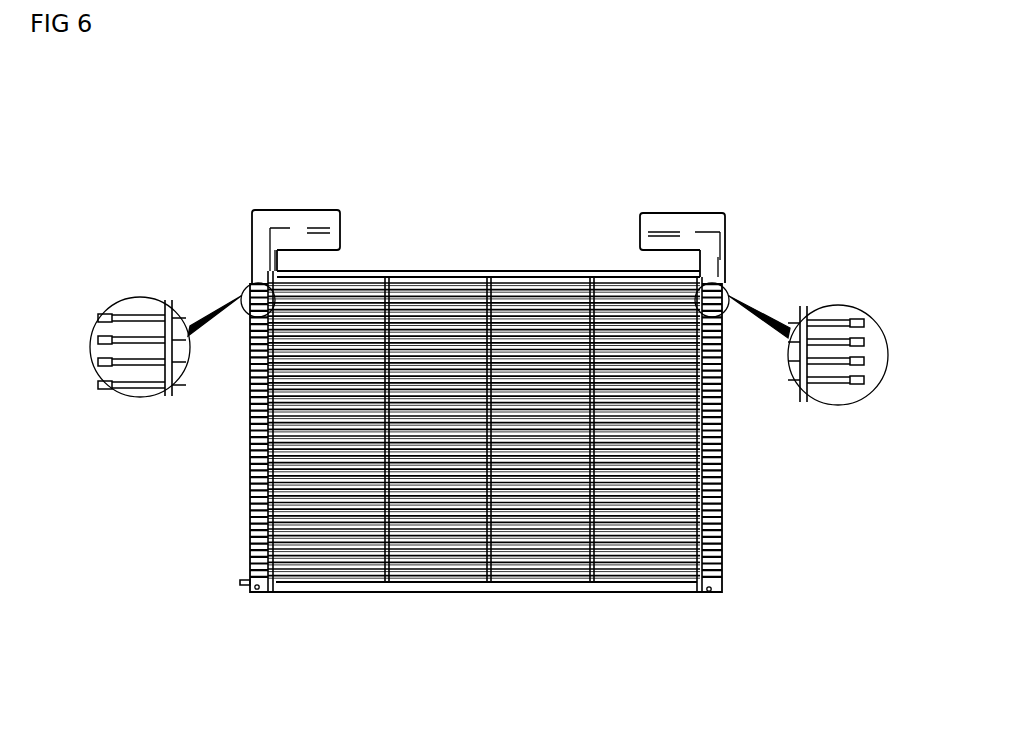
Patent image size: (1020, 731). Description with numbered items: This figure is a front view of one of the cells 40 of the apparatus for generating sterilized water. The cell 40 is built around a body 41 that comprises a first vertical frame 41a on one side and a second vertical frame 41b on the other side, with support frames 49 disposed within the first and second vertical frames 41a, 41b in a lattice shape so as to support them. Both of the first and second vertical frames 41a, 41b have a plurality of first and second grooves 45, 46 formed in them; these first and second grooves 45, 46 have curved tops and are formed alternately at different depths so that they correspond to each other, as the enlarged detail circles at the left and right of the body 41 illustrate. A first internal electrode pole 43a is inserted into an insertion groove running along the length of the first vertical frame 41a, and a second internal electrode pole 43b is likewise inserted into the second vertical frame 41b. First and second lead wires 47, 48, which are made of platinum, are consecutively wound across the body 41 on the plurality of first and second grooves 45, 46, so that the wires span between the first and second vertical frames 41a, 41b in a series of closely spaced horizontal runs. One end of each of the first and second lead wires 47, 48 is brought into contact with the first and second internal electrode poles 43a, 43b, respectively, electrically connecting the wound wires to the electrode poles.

The cell 40 is at (740, 155).
The body 41 is at (676, 600).
The first vertical frame 41a is at (253, 247).
The second vertical frame 41b is at (727, 223).
The first internal electrode pole 43a is at (280, 228).
The second internal electrode pole 43b is at (727, 242).
The first groove 45 is at (128, 318).
The second groove 46 is at (115, 340).
The first lead wire 47 is at (517, 280).
The second lead wire 48 is at (548, 290).
The support frame 49 is at (362, 303).